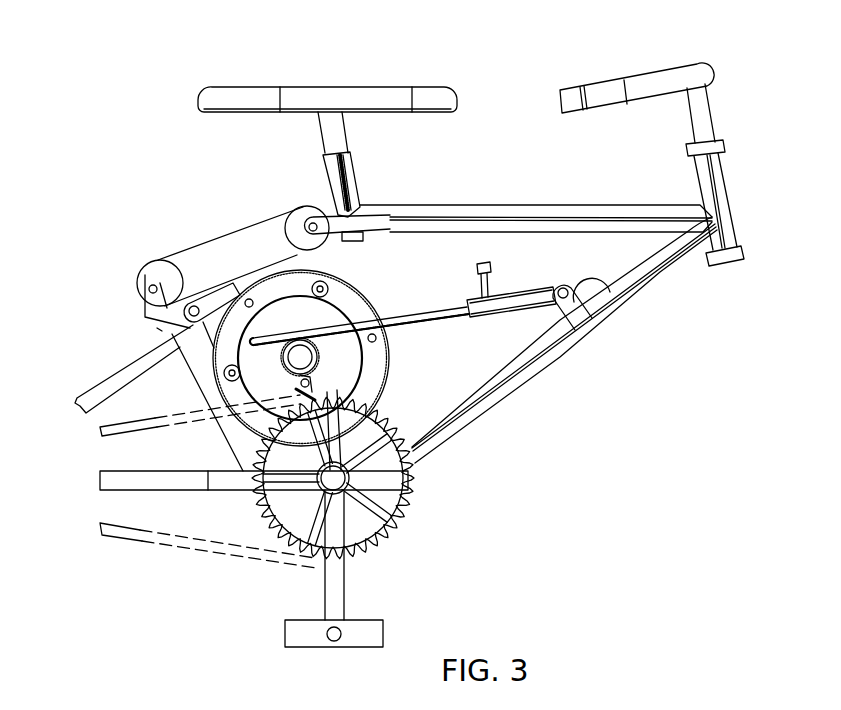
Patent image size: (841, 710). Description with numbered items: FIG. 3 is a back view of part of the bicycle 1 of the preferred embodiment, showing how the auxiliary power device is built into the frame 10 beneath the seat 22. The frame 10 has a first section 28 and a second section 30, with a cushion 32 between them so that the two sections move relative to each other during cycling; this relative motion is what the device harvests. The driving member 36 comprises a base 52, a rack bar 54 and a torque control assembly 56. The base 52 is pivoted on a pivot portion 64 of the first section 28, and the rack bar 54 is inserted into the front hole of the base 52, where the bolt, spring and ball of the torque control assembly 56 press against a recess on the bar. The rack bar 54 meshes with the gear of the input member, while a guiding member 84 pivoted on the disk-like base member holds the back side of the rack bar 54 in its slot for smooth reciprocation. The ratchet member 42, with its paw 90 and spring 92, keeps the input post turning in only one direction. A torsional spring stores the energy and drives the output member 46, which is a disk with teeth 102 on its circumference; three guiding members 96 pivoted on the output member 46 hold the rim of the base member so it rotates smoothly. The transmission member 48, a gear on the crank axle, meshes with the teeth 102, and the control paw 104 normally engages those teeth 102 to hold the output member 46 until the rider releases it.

The bicycle 1 is at (512, 97).
The frame 10 is at (741, 203).
The seat 22 is at (345, 95).
The first section 28 is at (646, 287).
The second section 30 is at (190, 372).
The cushion 32 is at (287, 220).
The driving member 36 is at (527, 307).
The ratchet member 42 is at (437, 582).
The output member 46 is at (228, 331).
The transmission member 48 is at (312, 470).
The base 52 is at (565, 325).
The rack bar 54 is at (459, 323).
The torque control assembly 56 is at (497, 263).
The pivot portion 64 is at (626, 305).
The guiding member 84 is at (237, 250).
The paw 90 is at (417, 323).
The spring 92 is at (410, 521).
The guiding members 96 is at (340, 278).
The teeth 102 is at (370, 305).
The paw 104 is at (197, 250).